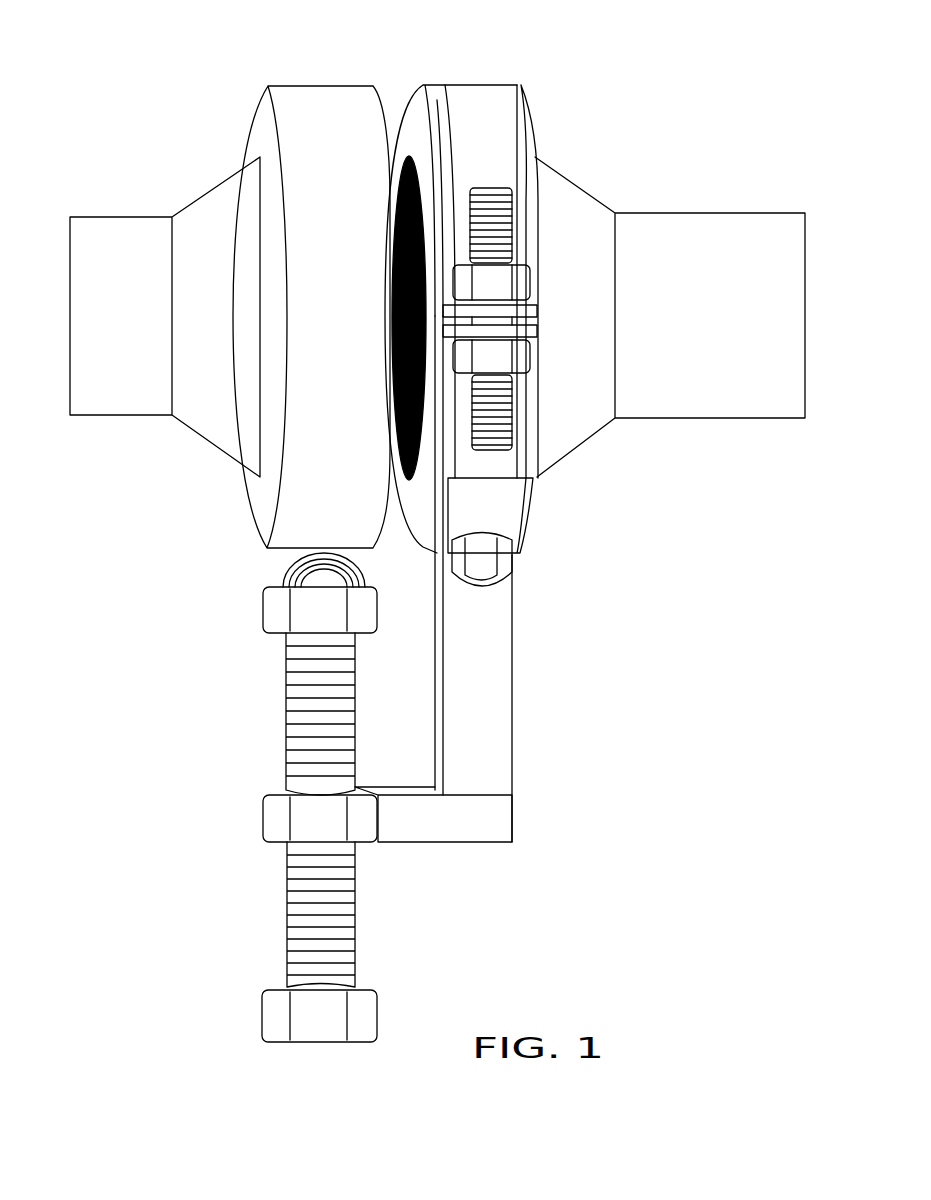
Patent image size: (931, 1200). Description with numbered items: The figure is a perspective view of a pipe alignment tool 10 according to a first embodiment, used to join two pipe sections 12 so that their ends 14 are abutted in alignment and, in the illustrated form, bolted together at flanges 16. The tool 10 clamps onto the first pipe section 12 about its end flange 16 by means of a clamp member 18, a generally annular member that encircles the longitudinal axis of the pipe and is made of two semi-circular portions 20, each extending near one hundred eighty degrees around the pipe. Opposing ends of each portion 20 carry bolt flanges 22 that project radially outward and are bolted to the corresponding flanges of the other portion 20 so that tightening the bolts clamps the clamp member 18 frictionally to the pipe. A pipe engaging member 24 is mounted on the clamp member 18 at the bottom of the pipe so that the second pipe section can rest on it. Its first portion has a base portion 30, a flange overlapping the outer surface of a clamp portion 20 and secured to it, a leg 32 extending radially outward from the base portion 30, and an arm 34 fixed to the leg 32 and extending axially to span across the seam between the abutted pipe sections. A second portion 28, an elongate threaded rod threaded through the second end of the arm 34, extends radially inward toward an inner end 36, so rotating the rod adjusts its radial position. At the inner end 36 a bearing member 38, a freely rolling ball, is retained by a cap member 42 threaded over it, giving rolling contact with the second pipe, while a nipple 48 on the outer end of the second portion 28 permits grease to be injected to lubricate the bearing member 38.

The pipe alignment tool 10 is at (632, 711).
The pipe section 12 is at (128, 237).
The pipe end 14 is at (311, 90).
The flange 16 is at (364, 90).
The clamp member 18 is at (491, 80).
The semi-circular portion 20 is at (500, 157).
The bolt flange 22 is at (537, 306).
The pipe engaging member 24 is at (469, 608).
The second portion 28 is at (277, 810).
The base portion 30 is at (517, 518).
The leg 32 is at (503, 728).
The arm 34 is at (453, 832).
The inner end 36 is at (288, 720).
The bearing member 38 is at (283, 570).
The cap member 42 is at (275, 607).
The nipple 48 is at (298, 1050).